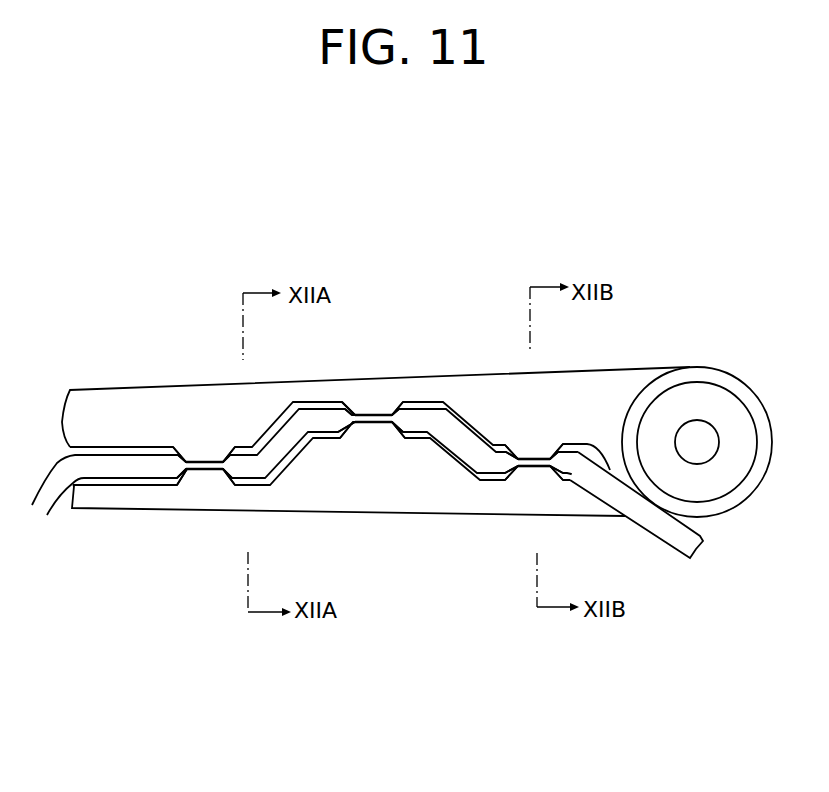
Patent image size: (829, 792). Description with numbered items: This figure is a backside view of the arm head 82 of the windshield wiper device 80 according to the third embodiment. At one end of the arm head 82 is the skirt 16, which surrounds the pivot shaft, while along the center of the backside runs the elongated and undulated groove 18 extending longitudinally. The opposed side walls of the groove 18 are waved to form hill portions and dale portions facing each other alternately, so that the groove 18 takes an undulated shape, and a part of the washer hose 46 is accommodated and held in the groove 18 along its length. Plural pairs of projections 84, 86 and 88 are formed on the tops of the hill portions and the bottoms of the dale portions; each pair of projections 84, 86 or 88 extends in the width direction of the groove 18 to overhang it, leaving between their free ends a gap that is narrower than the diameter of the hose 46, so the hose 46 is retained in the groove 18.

The windshield wiper device 80 is at (395, 236).
The arm head 82 is at (465, 368).
The projections 84 is at (533, 456).
The projections 86 is at (383, 412).
The projections 88 is at (208, 460).
The groove 18 is at (459, 451).
The skirt 16 is at (743, 396).
The washer hose 46 is at (663, 528).